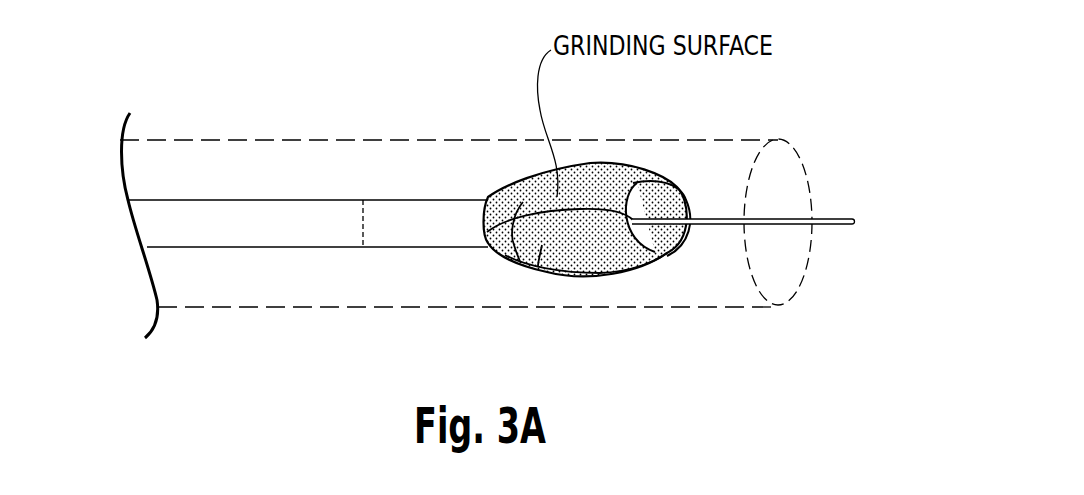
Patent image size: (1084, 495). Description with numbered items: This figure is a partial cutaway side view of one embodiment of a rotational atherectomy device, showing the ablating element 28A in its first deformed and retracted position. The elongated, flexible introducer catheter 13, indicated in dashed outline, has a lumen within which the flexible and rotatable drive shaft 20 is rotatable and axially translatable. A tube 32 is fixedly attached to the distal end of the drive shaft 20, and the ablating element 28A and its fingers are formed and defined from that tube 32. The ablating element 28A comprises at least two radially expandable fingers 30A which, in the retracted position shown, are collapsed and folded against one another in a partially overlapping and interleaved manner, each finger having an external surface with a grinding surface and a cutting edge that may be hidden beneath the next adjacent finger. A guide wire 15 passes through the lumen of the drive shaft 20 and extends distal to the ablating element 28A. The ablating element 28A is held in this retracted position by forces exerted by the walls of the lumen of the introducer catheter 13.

The introducer catheter 13 is at (216, 140).
The drive shaft 20 is at (300, 198).
The tube 32 is at (382, 215).
The ablating element 28A is at (625, 163).
The radially expandable fingers 30A is at (520, 262).
The guide wire 15 is at (833, 217).